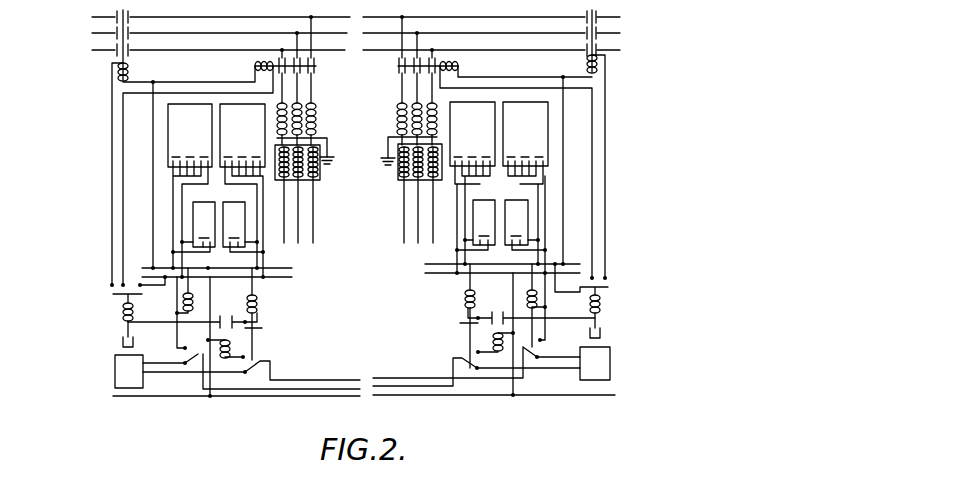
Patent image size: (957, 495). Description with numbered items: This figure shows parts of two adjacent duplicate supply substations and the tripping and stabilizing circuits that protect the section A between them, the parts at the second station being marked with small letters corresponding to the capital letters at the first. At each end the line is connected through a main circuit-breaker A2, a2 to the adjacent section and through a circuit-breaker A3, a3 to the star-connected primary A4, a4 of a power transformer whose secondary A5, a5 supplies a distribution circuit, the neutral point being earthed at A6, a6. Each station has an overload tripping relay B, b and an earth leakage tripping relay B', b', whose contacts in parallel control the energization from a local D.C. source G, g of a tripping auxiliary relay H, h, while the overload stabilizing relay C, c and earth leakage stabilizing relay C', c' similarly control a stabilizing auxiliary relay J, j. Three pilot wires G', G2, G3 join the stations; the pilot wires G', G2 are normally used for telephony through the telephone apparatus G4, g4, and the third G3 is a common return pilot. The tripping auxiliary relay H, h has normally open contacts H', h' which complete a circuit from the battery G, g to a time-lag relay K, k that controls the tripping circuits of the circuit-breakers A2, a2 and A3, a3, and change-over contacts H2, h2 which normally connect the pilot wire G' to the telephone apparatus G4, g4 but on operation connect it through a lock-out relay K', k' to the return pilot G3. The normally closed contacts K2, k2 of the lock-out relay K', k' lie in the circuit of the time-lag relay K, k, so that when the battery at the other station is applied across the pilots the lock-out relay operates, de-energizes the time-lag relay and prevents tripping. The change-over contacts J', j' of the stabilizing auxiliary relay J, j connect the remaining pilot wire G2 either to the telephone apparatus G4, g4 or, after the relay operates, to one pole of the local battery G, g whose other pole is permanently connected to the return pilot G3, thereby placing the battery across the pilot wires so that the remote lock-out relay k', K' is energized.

The main circuit-breaker A2 is at (96, 33).
The protected section A is at (350, 17).
The circuit-breaker A3 is at (317, 68).
The power transformer primary A4 is at (316, 118).
The power transformer secondary A5 is at (314, 181).
The earth connection A6 is at (332, 162).
The main circuit-breaker a2 is at (600, 31).
The circuit-breaker a3 is at (397, 62).
The power transformer primary a4 is at (400, 118).
The power transformer secondary a5 is at (404, 181).
The earth connection a6 is at (384, 164).
The overload stabilizing relay C is at (190, 190).
The overload tripping relay B is at (242, 190).
The earth leakage stabilizing relay C' is at (193, 228).
The earth leakage tripping relay B' is at (244, 228).
The overload tripping relay b is at (472, 187).
The overload stabilizing relay c is at (525, 187).
The earth leakage tripping relay b' is at (475, 226).
The earth leakage stabilizing relay c' is at (526, 226).
The local D.C. source G is at (226, 271).
The local battery g is at (489, 267).
The time-lag relay K is at (130, 312).
The lock-out relay K' is at (254, 347).
The normally closed contacts of lock-out relay K2 is at (192, 311).
The stabilizing auxiliary relay J is at (198, 309).
The change-over contacts of stabilizing auxiliary relay J' is at (251, 389).
The tripping auxiliary relay H is at (270, 314).
The normally open contacts of tripping auxiliary relay H' is at (267, 328).
The change-over contacts of tripping auxiliary relay H2 is at (270, 367).
The telephone apparatus G4 is at (124, 372).
The pilot wire G' is at (236, 350).
The pilot wire G2 is at (378, 387).
The return pilot wire G3 is at (427, 394).
The telephone apparatus g4 is at (603, 360).
The tripping auxiliary relay h is at (447, 316).
The normally open contacts of tripping auxiliary relay h' is at (448, 324).
The change-over contacts of tripping auxiliary relay h2 is at (468, 370).
The time-lag relay k is at (525, 312).
The lock-out relay k' is at (466, 342).
The normally closed contacts of lock-out relay k2 is at (531, 308).
The stabilizing auxiliary relay j is at (515, 305).
The change-over contacts of stabilizing auxiliary relay j' is at (476, 385).